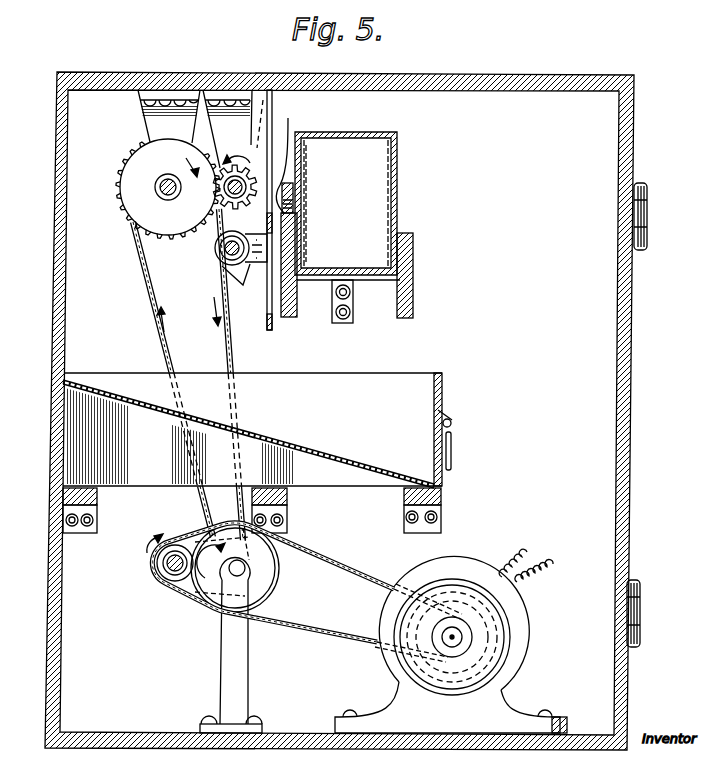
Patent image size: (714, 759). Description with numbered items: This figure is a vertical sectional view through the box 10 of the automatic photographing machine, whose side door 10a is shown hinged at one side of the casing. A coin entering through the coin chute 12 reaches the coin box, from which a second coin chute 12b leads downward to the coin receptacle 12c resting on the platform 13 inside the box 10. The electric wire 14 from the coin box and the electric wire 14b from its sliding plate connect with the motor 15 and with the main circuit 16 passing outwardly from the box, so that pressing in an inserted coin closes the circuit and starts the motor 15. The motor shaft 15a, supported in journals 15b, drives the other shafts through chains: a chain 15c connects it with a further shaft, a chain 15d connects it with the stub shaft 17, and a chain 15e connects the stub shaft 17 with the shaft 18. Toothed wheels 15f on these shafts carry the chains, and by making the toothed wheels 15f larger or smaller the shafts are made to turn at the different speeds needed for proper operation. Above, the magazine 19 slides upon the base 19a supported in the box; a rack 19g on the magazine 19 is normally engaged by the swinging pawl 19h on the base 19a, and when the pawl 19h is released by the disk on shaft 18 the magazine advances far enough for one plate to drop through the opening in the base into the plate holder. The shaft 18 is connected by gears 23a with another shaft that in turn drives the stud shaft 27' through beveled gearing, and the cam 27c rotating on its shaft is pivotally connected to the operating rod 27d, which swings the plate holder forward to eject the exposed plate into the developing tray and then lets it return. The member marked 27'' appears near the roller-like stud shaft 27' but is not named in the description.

The box 10 is at (54, 334).
The side door 10a is at (632, 300).
The coin chute 12 is at (158, 71).
The coin chute 12b is at (233, 84).
The coin receptacle 12c is at (356, 376).
The platform 13 is at (98, 493).
The electric wire 14 is at (521, 552).
The electric wire 14b is at (559, 565).
The motor 15 is at (461, 567).
The motor shaft 15a is at (455, 637).
The journals 15b is at (212, 583).
The chain 15c is at (290, 621).
The chain 15d is at (343, 562).
The chain 15e is at (236, 350).
The toothed wheels 15f is at (507, 617).
The main circuit 16 is at (158, 565).
The stub shaft 17 is at (248, 564).
The shaft 18 is at (160, 182).
The magazine 19 is at (398, 160).
The base 19a is at (365, 268).
The rack 19g is at (262, 168).
The pawl 19h is at (292, 156).
The gears 23a is at (143, 198).
The cam 27c is at (266, 222).
The stud shaft 27' is at (211, 267).
The roller arm 27'' is at (243, 288).
The operating rod 27d is at (272, 330).